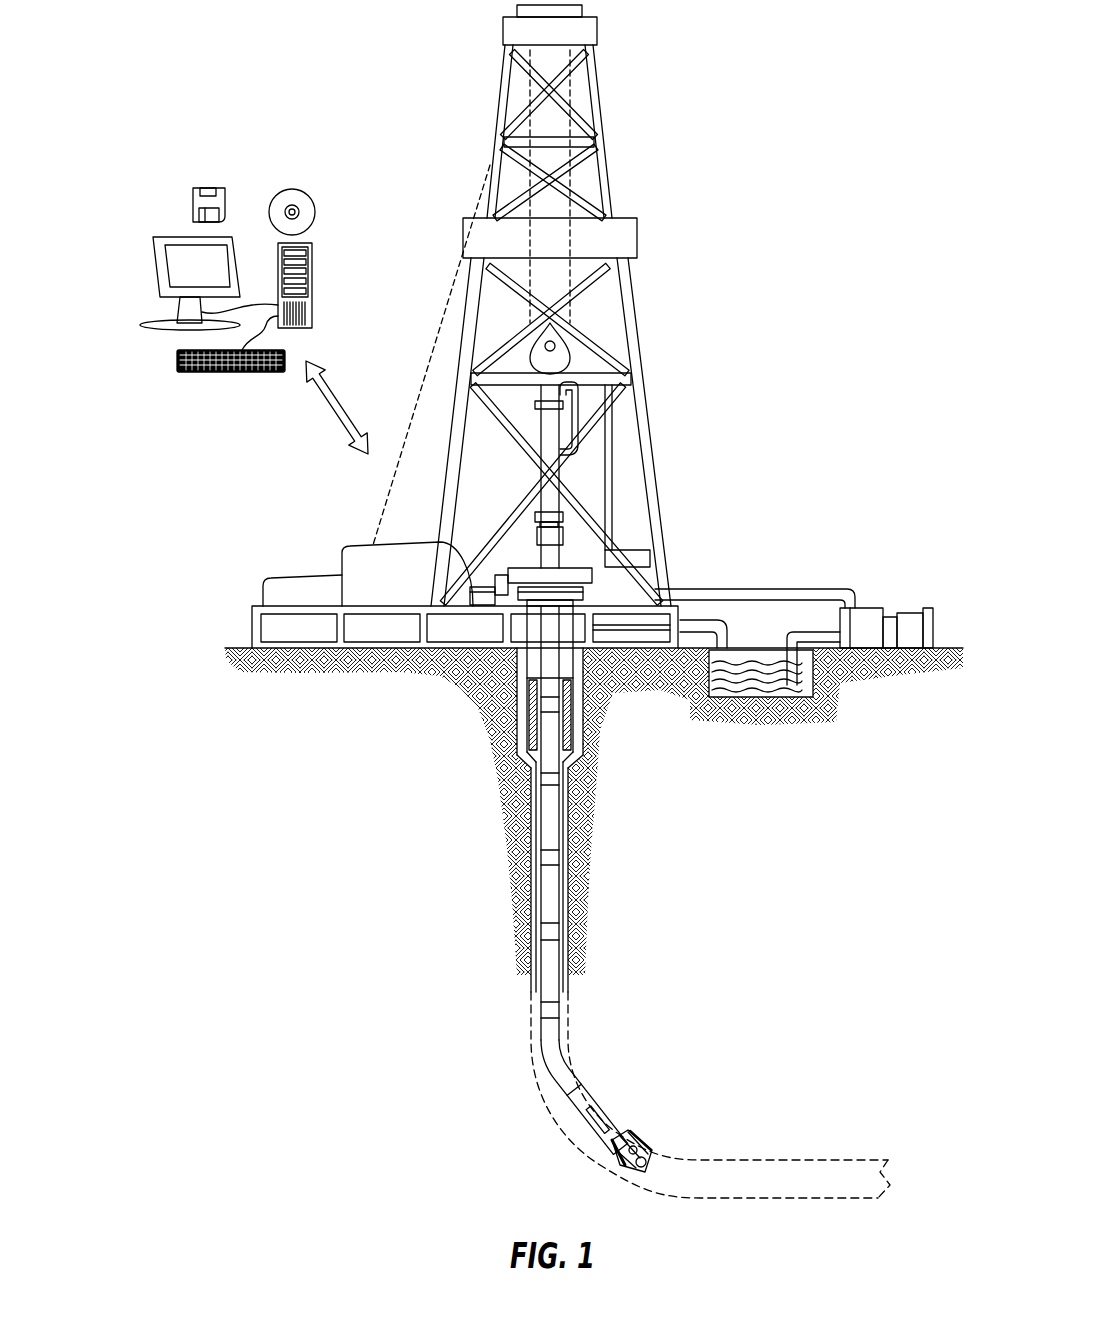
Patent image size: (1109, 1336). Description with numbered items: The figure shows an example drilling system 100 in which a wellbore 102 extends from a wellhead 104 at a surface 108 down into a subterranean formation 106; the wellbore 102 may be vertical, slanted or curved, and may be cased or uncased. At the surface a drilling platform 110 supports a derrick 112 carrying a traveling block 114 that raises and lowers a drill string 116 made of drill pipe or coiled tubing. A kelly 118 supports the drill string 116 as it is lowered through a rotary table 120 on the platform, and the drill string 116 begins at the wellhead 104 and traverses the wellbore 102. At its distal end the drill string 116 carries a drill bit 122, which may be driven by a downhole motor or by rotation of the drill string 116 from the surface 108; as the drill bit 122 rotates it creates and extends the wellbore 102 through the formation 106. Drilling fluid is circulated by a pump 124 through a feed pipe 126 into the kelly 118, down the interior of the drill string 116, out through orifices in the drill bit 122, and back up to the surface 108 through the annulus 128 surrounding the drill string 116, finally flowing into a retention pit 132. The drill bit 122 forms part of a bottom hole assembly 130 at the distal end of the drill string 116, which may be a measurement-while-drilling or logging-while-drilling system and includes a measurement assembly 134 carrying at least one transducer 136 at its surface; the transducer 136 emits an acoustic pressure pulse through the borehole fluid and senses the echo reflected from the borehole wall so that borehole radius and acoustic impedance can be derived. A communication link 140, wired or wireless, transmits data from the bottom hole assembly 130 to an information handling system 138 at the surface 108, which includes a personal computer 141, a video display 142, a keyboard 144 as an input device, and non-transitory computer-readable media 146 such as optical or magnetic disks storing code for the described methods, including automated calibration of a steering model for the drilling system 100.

The drilling system 100 is at (870, 106).
The wellbore 102 is at (568, 852).
The wellhead 104 is at (600, 592).
The subterranean formation 106 is at (800, 944).
The surface 108 is at (945, 648).
The drilling platform 110 is at (252, 628).
The derrick 112 is at (606, 158).
The traveling block 114 is at (578, 349).
The drill string 116 is at (562, 836).
The kelly 118 is at (550, 432).
The rotary table 120 is at (587, 570).
The drill bit 122 is at (650, 1150).
The pump 124 is at (868, 607).
The feed pipe 126 is at (792, 589).
The annulus 128 is at (532, 852).
The bottom hole assembly 130 is at (555, 1113).
The retention pit 132 is at (757, 685).
The measurement assembly 134 is at (593, 1080).
The transducer 136 is at (598, 1122).
The information handling system 138 is at (155, 168).
The communication link 140 is at (328, 408).
The personal computer 141 is at (312, 256).
The video display 142 is at (158, 275).
The keyboard 144 is at (188, 372).
The non-transitory computer-readable media 146 is at (293, 189).